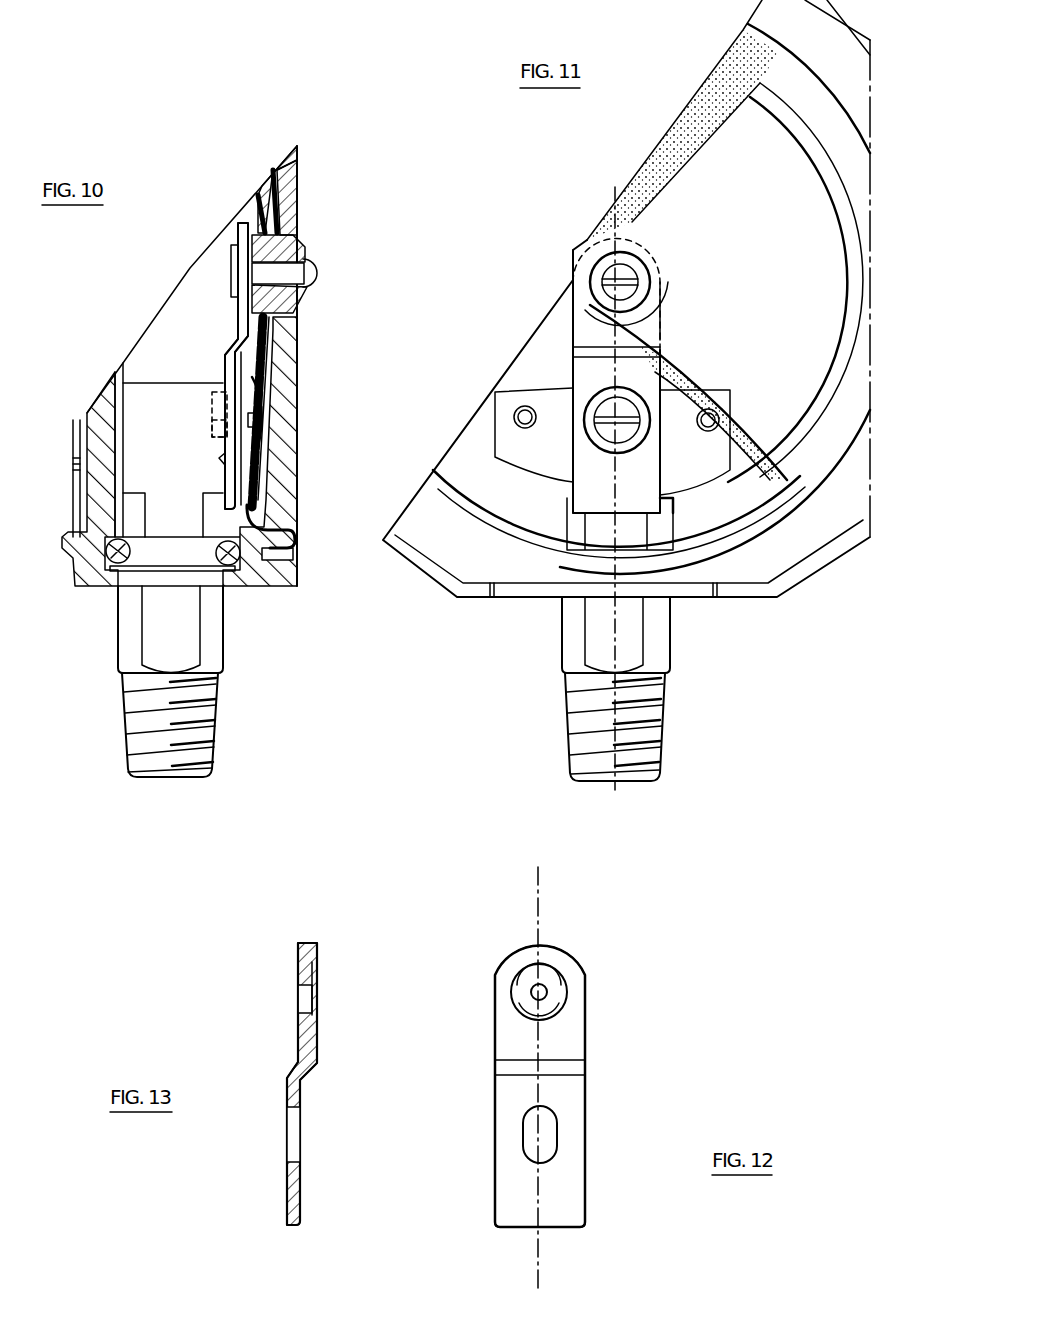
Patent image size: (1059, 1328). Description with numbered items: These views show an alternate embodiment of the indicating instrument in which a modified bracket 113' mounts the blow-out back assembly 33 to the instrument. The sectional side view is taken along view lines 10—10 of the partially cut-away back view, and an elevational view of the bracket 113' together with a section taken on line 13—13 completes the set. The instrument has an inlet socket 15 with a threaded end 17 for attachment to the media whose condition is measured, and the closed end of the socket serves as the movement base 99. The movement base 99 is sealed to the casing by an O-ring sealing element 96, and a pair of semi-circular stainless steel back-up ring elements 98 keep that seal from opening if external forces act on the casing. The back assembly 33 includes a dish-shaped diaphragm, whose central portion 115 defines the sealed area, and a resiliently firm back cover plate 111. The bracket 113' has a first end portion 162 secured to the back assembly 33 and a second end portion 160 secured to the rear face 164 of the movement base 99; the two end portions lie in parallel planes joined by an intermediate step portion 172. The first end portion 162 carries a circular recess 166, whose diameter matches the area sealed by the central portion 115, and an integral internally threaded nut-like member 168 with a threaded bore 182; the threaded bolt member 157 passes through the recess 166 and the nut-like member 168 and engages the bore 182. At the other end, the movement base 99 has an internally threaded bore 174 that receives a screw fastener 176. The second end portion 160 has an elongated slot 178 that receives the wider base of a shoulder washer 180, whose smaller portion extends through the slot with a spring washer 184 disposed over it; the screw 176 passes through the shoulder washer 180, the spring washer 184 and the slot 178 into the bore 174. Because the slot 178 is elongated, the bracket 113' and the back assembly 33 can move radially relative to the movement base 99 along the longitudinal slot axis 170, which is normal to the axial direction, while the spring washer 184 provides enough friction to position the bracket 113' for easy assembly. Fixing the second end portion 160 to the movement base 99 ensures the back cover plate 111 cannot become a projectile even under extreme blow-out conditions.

In FIG. 11, the view lines 10 is at (615, 187).
In FIG. 12, the section line 13 is at (538, 903).
In FIG. 10, the inlet socket 15 is at (232, 705).
In FIG. 11, the inlet socket 15 is at (675, 720).
In FIG. 10, the threaded end 17 is at (206, 735).
In FIG. 11, the threaded end 17 is at (660, 747).
In FIG. 10, the blow-out back assembly 33 is at (335, 251).
In FIG. 10, the O-ring sealing element 96 is at (127, 561).
In FIG. 10, the back-up ring elements 98 is at (183, 563).
In FIG. 10, the movement base 99 is at (184, 495).
In FIG. 11, the movement base 99 is at (676, 502).
In FIG. 10, the back cover plate 111 is at (278, 177).
In FIG. 10, the modified bracket 113' is at (204, 366).
In FIG. 11, the modified bracket 113' is at (560, 376).
In FIG. 12, the modified bracket 113' is at (613, 1086).
In FIG. 13, the modified bracket 113' is at (233, 1084).
In FIG. 10, the central portion of diaphragm 115 is at (282, 228).
In FIG. 10, the threaded bolt member 157 is at (318, 283).
In FIG. 11, the threaded bolt member 157 is at (633, 285).
In FIG. 10, the second end portion 160 is at (240, 476).
In FIG. 11, the second end portion 160 is at (638, 504).
In FIG. 12, the second end portion 160 is at (575, 1194).
In FIG. 13, the second end portion 160 is at (288, 1205).
In FIG. 10, the first end portion 162 is at (246, 222).
In FIG. 11, the first end portion 162 is at (590, 238).
In FIG. 12, the first end portion 162 is at (499, 948).
In FIG. 13, the first end portion 162 is at (305, 932).
In FIG. 10, the rear face 164 is at (222, 456).
In FIG. 11, the rear face 164 is at (568, 449).
In FIG. 12, the circular recess 166 is at (516, 993).
In FIG. 13, the circular recess 166 is at (315, 973).
In FIG. 10, the nut-like member 168 is at (232, 252).
In FIG. 13, the nut-like member 168 is at (300, 966).
In FIG. 12, the longitudinal slot axis 170 is at (533, 886).
In FIG. 10, the intermediate step portion 172 is at (236, 342).
In FIG. 11, the intermediate step portion 172 is at (568, 345).
In FIG. 12, the intermediate step portion 172 is at (575, 1067).
In FIG. 13, the intermediate step portion 172 is at (300, 1066).
In FIG. 10, the internally threaded bore 174 is at (212, 405).
In FIG. 10, the screw fastener 176 is at (258, 424).
In FIG. 11, the screw fastener 176 is at (604, 405).
In FIG. 10, the elongated slot 178 is at (212, 427).
In FIG. 12, the elongated slot 178 is at (550, 1125).
In FIG. 13, the elongated slot 178 is at (292, 1120).
In FIG. 10, the shoulder washer 180 is at (264, 392).
In FIG. 12, the threaded bore 182 is at (549, 993).
In FIG. 13, the threaded bore 182 is at (300, 988).
In FIG. 10, the spring washer 184 is at (258, 378).
In FIG. 11, the spring washer 184 is at (592, 402).